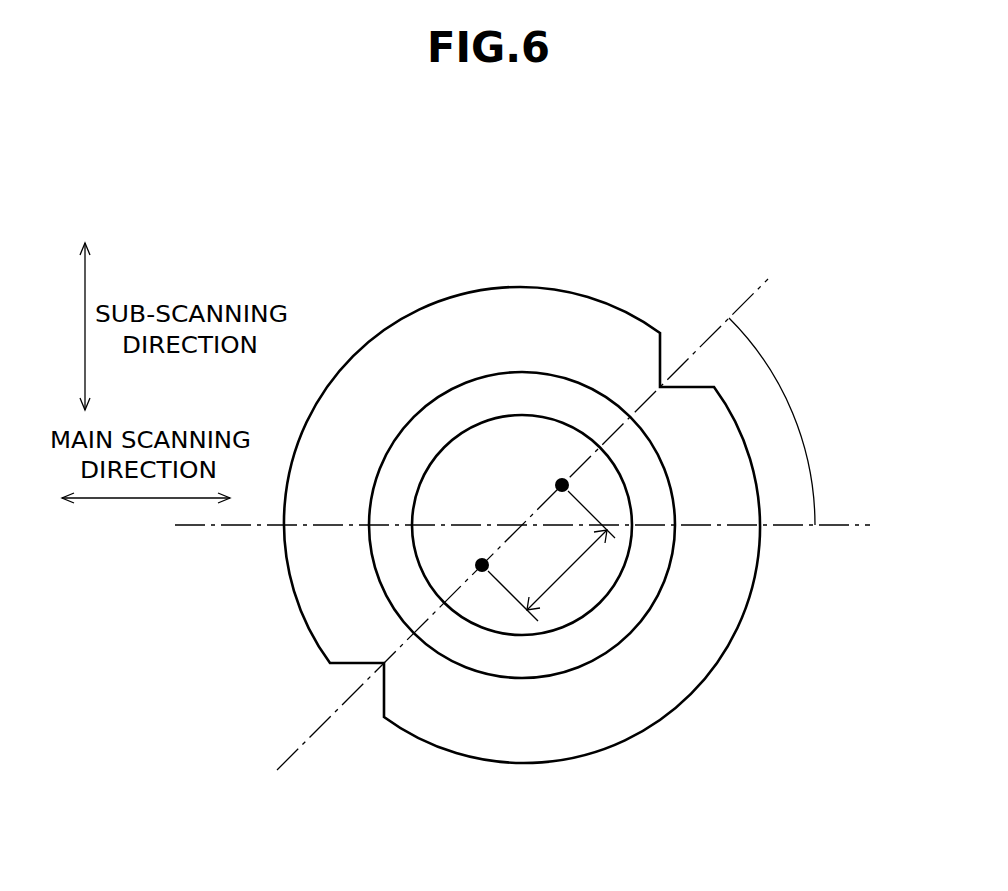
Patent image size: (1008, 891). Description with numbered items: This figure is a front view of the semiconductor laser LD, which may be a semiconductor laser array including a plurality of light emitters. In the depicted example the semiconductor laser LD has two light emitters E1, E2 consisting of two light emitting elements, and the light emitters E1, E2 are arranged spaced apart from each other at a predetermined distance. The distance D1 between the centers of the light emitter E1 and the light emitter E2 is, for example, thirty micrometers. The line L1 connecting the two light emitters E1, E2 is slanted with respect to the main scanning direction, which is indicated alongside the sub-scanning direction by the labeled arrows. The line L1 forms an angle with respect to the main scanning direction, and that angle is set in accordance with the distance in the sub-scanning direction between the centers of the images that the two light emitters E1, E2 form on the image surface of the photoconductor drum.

The semiconductor laser LD is at (336, 258).
The light emitter E1 is at (555, 479).
The light emitter E2 is at (480, 557).
The distance D1 is at (567, 570).
The line L1 is at (306, 743).